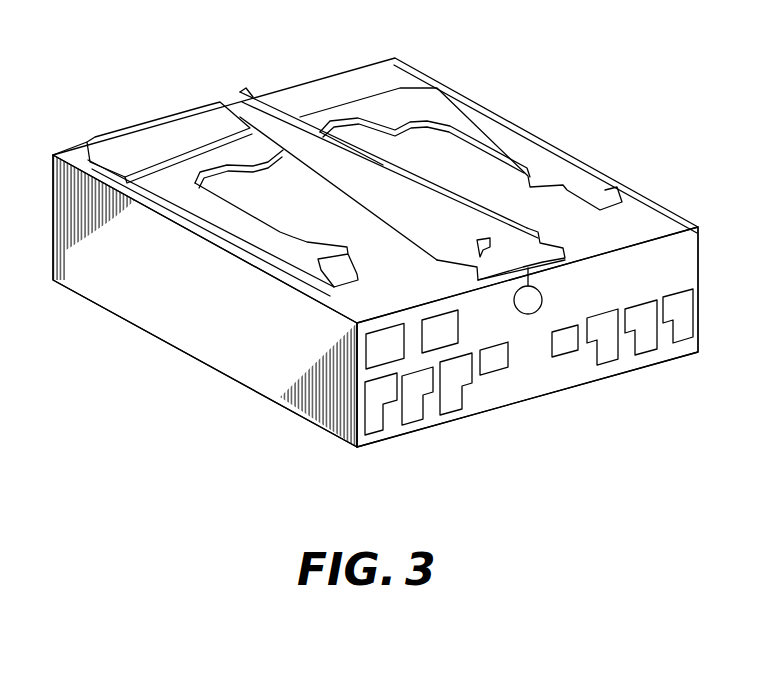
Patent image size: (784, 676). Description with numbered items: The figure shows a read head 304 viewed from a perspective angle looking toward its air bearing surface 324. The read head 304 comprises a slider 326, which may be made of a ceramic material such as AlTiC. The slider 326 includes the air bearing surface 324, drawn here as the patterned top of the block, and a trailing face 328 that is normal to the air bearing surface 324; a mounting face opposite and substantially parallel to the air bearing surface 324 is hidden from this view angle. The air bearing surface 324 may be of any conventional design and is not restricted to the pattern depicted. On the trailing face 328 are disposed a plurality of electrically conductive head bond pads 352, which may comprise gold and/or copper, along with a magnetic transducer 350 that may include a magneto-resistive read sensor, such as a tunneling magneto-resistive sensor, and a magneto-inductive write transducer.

The read head 304 is at (548, 104).
The air bearing surface 324 is at (337, 117).
The slider 326 is at (133, 306).
The trailing face 328 is at (535, 383).
The magnetic transducer 350 is at (542, 303).
The head bond pads 352 is at (375, 417).